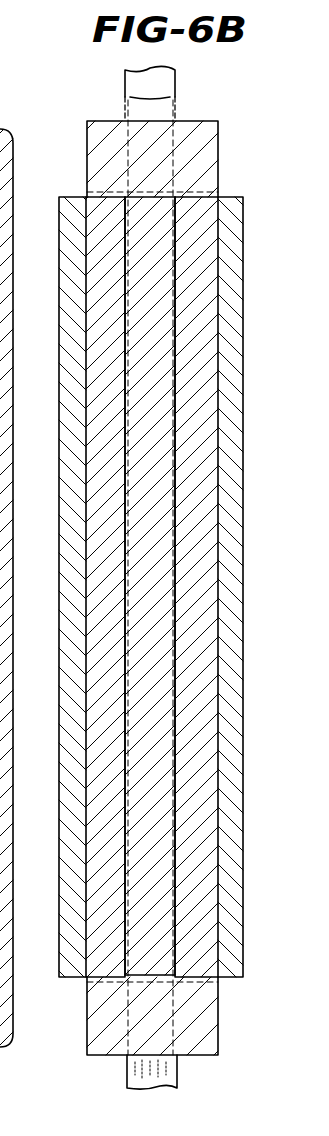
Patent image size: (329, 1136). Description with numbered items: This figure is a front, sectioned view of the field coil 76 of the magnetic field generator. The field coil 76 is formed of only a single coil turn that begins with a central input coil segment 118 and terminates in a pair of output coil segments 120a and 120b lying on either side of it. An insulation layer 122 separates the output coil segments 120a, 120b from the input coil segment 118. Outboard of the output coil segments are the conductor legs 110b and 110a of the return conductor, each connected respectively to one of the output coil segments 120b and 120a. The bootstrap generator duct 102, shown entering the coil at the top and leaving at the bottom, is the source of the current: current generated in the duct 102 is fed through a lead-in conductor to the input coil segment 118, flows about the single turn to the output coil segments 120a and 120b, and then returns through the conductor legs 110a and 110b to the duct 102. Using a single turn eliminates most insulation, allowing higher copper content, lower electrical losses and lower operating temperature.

The bootstrap generator duct 102 is at (175, 85).
The field coil 76 is at (209, 115).
The conductor leg 110a is at (243, 209).
The conductor leg 110b is at (67, 213).
The input coil segment 118 is at (137, 383).
The output coil segment 120a is at (100, 537).
The output coil segment 120b is at (187, 558).
The insulation layer 122 is at (177, 291).